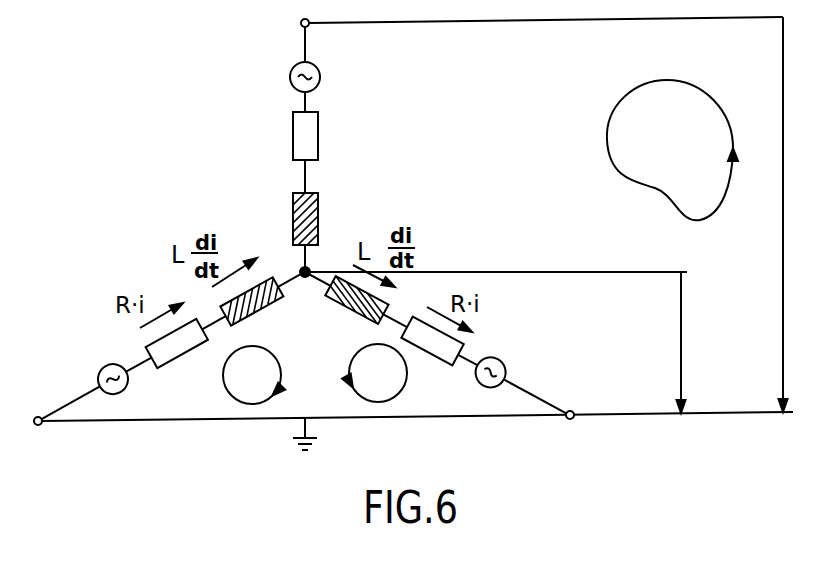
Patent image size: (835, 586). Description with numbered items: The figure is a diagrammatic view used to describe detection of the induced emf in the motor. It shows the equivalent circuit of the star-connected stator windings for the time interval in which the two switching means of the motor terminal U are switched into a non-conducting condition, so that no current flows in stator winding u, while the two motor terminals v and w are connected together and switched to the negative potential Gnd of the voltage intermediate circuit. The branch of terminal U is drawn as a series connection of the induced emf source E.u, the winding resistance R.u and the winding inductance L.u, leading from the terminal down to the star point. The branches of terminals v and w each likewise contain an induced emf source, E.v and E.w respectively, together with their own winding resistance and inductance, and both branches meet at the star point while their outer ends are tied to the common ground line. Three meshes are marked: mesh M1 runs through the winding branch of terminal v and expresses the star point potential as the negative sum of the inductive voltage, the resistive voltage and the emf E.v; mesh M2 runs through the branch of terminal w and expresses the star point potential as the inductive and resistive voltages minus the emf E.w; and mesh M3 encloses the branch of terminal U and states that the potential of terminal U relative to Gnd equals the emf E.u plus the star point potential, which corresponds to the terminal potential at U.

The motor terminal u U is at (293, 36).
The motor terminal v is at (30, 432).
The motor terminal w is at (582, 424).
The induced emf of stator winding u E.u is at (340, 67).
The induced emf of stator winding v E.v is at (94, 354).
The induced emf of stator winding w E.w is at (535, 367).
The resistance of stator winding u R.u is at (333, 152).
The inductance of stator winding u L.u is at (332, 226).
The mesh M1 is at (254, 375).
The mesh M2 is at (374, 373).
The mesh M3 is at (672, 150).